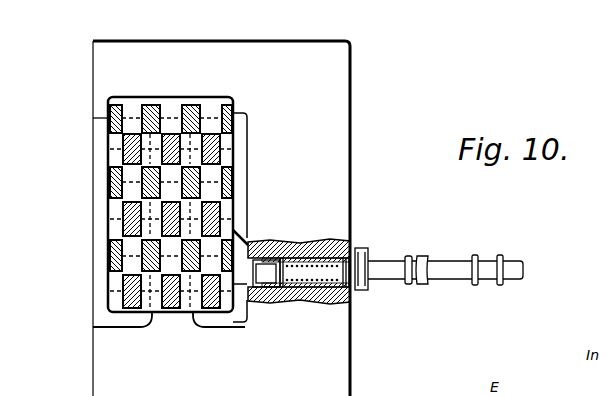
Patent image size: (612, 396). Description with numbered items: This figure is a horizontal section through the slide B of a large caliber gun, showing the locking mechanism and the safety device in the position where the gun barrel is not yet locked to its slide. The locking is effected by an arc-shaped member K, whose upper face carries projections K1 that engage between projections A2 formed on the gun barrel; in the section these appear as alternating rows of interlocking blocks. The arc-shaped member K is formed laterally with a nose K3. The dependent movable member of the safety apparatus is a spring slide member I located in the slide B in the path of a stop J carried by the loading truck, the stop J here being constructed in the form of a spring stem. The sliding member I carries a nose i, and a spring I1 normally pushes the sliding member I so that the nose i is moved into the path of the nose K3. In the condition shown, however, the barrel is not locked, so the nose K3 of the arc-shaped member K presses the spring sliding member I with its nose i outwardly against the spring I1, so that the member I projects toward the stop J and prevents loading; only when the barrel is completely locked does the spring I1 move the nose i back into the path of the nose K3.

The slide B is at (336, 105).
The arc-shaped member K is at (213, 100).
The projections on the gun barrel A2 is at (130, 145).
The projections K1 is at (151, 115).
The nose K3 is at (242, 277).
The spring I1 is at (312, 250).
The nose i is at (267, 275).
The spring slide member I is at (392, 267).
The stop J is at (440, 268).